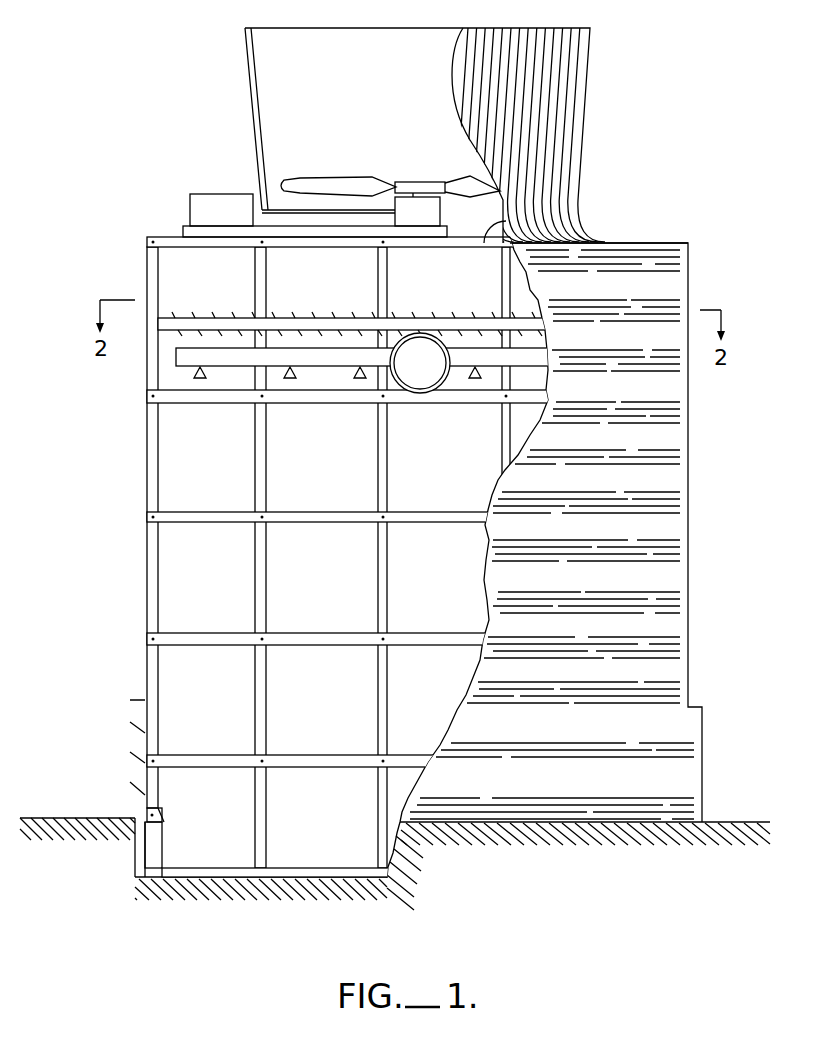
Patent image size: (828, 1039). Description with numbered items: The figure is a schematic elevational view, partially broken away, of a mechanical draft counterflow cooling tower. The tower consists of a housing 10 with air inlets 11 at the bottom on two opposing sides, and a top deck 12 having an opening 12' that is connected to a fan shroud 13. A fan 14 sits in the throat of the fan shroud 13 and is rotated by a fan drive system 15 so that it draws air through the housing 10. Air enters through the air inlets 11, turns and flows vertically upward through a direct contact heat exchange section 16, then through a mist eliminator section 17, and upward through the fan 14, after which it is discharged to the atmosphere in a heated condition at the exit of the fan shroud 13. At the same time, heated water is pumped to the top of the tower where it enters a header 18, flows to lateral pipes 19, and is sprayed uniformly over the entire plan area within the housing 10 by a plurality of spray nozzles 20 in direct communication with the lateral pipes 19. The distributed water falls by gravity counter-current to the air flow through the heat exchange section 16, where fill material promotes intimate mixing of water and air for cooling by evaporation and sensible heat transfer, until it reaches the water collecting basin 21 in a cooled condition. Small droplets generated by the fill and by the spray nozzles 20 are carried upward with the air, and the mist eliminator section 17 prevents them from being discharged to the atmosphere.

The housing 10 is at (662, 468).
The air inlets 11 is at (126, 766).
The top deck 12 is at (609, 221).
The opening 12' is at (550, 218).
The fan shroud 13 is at (550, 88).
The fan 14 is at (323, 185).
The fan drive system 15 is at (408, 213).
The direct contact heat exchange section 16 is at (300, 483).
The mist eliminator section 17 is at (176, 320).
The header 18 is at (425, 360).
The lateral pipes 19 is at (190, 357).
The spray nozzles 20 is at (201, 394).
The water collecting basin 21 is at (183, 856).